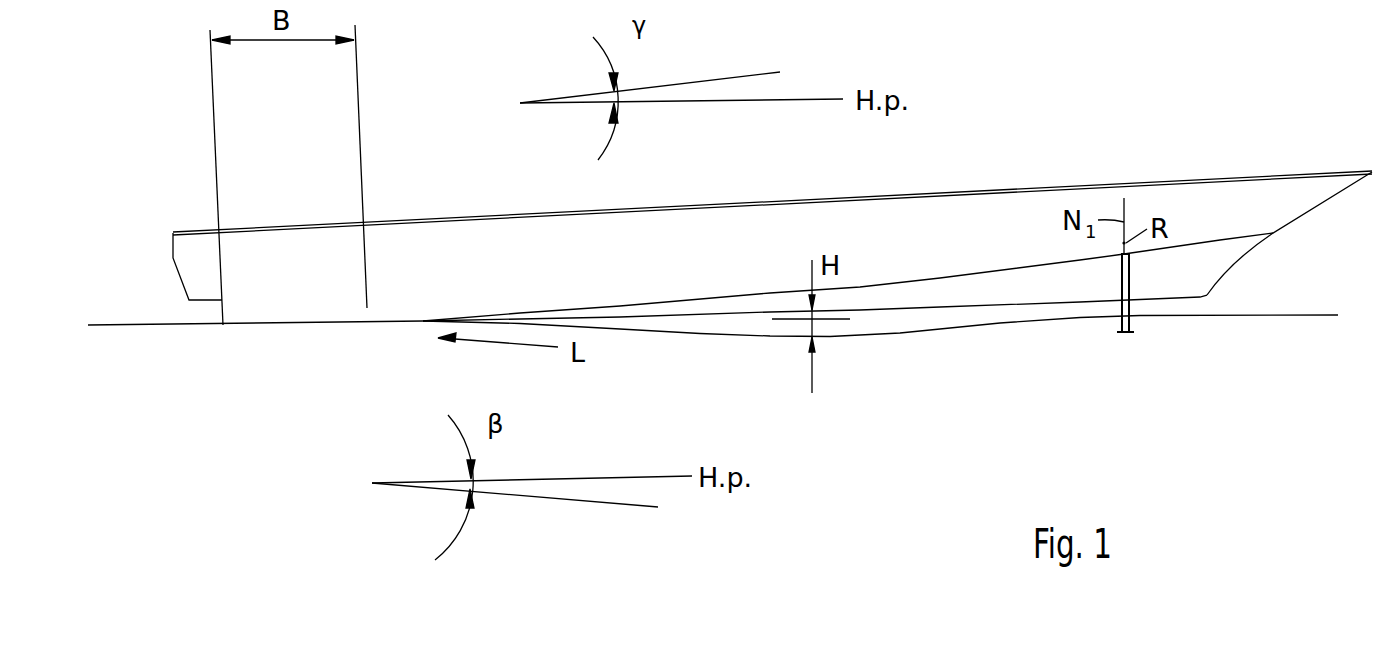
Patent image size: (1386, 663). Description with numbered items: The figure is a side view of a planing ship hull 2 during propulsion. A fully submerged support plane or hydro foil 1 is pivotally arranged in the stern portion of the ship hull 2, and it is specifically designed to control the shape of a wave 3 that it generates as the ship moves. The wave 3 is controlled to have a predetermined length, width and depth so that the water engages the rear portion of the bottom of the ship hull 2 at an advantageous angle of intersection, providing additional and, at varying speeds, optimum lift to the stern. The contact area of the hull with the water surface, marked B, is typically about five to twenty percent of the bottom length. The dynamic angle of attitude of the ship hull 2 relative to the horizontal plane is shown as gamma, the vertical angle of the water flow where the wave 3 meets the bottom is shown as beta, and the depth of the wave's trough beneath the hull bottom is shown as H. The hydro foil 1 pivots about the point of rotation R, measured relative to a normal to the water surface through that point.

The hydro foil 1 is at (1115, 345).
The ship hull 2 is at (1048, 169).
The wave 3 is at (728, 346).